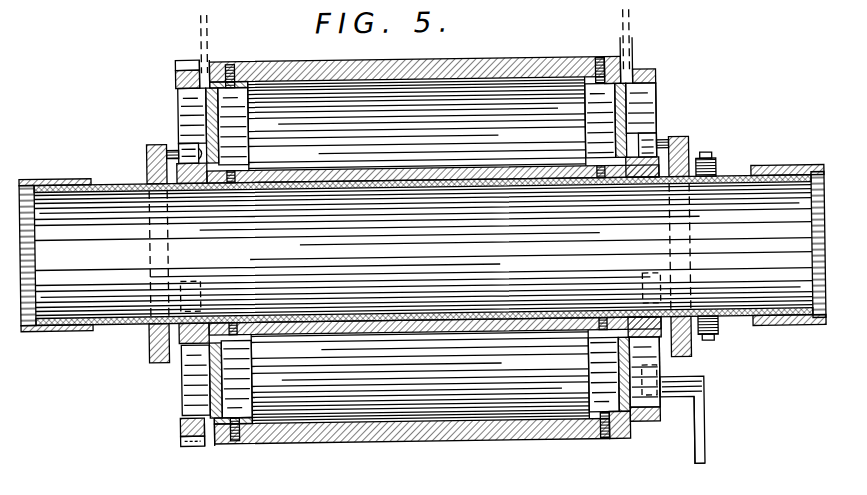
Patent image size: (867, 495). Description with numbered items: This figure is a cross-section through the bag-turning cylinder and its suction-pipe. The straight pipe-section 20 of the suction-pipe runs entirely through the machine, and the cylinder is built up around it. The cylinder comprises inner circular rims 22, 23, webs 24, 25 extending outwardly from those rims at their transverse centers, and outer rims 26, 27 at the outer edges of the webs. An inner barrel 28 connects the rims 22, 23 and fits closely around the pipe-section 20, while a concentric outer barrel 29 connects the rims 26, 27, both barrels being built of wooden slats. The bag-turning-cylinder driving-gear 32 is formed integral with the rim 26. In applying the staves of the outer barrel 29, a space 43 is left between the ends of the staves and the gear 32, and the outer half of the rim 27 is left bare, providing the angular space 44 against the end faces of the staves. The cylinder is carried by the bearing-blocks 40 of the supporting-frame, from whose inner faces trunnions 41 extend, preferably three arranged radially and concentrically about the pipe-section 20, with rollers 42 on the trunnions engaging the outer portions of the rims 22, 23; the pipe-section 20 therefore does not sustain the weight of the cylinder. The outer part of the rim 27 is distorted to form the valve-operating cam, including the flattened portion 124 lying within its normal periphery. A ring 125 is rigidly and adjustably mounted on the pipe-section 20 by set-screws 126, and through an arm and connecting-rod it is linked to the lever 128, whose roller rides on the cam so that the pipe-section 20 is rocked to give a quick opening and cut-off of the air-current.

The suction-pipe section 20 is at (422, 238).
The inner circular rim 22 is at (250, 342).
The inner circular rim 23 is at (595, 357).
The web 24 is at (214, 382).
The web 25 is at (620, 376).
The outer rim 26 is at (182, 424).
The outer rim 27 is at (655, 425).
The inner barrel 28 is at (334, 168).
The outer barrel 29 is at (283, 61).
The bag-turning-cylinder driving-gear 32 is at (185, 443).
The bag-turning-cylinder bearing-block 40 is at (690, 152).
The trunnion 41 is at (176, 150).
The roller 42 is at (190, 142).
The space 43 is at (213, 72).
The angular space 44 is at (633, 72).
The flattened portion 124 is at (645, 356).
The ring 125 is at (762, 172).
The set-screw 126 is at (712, 160).
The lever 128 is at (703, 437).